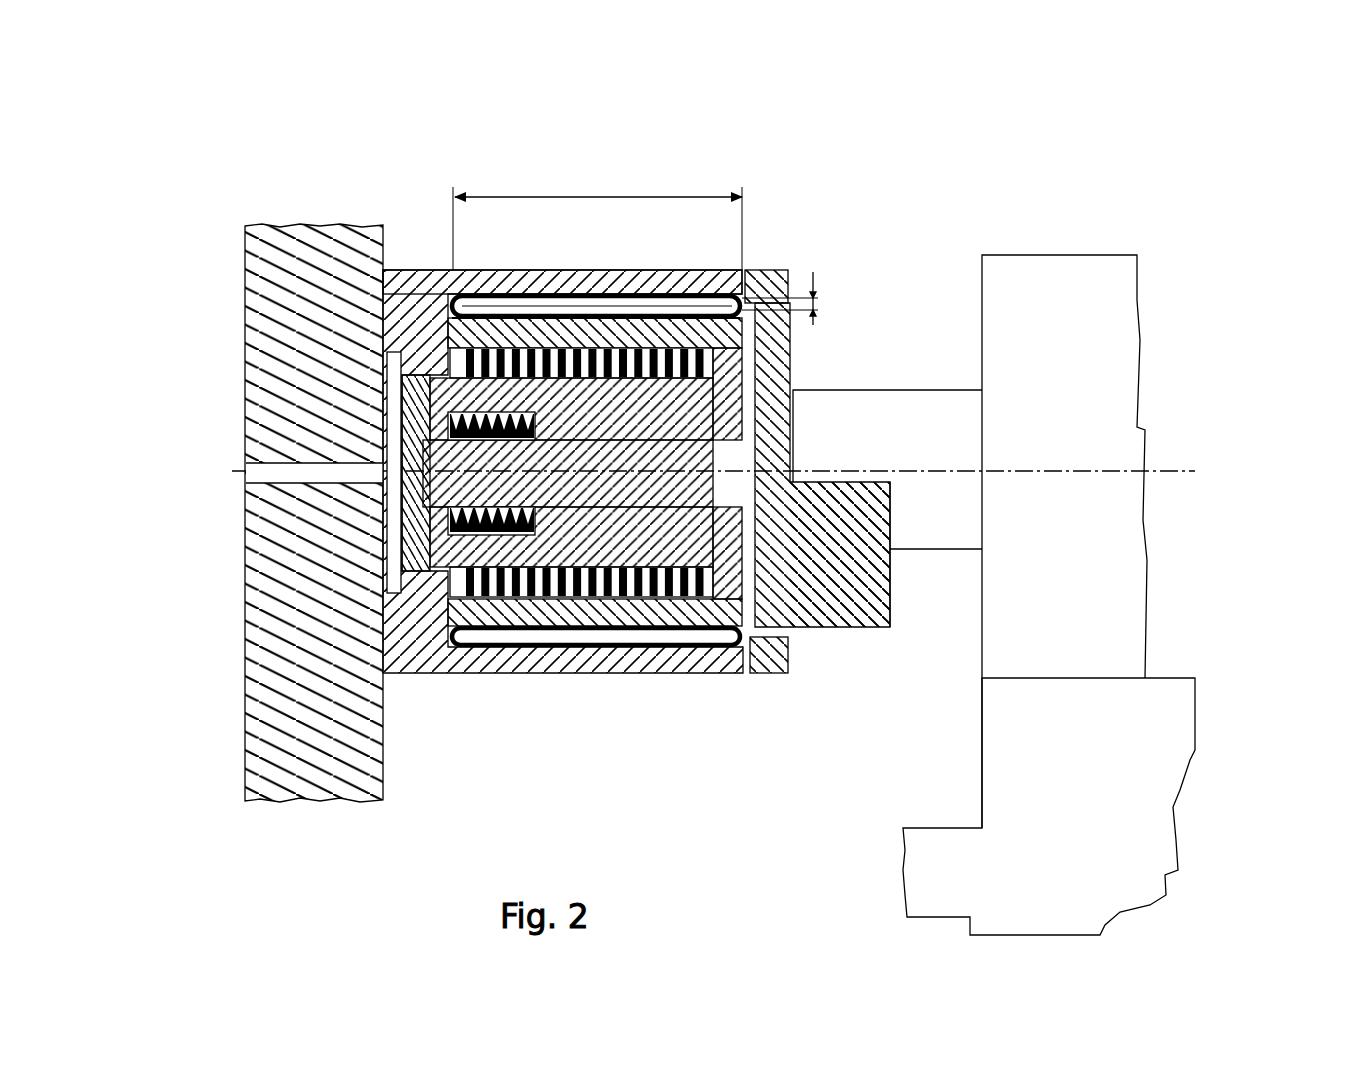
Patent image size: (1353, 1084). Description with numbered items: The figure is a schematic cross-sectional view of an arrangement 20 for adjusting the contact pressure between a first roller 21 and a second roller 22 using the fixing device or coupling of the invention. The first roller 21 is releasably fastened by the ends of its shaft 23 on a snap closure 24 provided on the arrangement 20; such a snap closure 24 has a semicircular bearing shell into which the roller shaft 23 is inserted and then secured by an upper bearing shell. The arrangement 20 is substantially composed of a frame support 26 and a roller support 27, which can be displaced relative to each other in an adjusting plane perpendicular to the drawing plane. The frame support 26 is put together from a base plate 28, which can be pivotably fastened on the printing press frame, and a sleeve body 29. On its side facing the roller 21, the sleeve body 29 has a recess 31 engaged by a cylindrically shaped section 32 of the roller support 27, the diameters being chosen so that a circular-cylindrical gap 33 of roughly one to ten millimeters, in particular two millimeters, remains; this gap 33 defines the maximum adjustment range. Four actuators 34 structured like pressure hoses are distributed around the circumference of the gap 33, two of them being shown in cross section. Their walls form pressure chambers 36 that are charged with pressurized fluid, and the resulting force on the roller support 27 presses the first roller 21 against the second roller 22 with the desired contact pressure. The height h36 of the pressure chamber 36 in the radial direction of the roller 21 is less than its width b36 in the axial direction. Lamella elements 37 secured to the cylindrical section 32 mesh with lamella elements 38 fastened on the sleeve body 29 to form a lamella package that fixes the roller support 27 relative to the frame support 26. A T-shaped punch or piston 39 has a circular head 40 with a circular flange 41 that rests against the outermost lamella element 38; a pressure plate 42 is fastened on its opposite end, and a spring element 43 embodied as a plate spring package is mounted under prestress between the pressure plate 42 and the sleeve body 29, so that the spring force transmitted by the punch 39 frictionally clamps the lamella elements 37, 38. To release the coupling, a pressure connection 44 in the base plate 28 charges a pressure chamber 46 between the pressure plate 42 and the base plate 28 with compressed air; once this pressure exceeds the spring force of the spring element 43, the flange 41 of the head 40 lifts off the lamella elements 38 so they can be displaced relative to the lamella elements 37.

The arrangement 20 is at (599, 458).
The first roller 21 is at (1115, 388).
The second roller 22 is at (1132, 757).
The shaft 23 is at (855, 418).
The snap closure 24 is at (840, 617).
The frame support 26 is at (405, 222).
The roller support 27 is at (787, 350).
The base plate 28 is at (308, 247).
The sleeve body 29 is at (525, 282).
The recess 31 is at (712, 302).
The cylindrically shaped section 32 is at (667, 312).
The gap 33 is at (595, 294).
The actuator 34 is at (752, 290).
The pressure chamber 36 is at (486, 296).
The lamella elements 37 is at (657, 598).
The lamella elements 38 is at (612, 585).
The punch or piston 39 is at (560, 487).
The head 40 is at (742, 598).
The flange 41 is at (718, 603).
The pressure plate 42 is at (452, 518).
The spring element 43 is at (455, 425).
The pressure connection 44 is at (262, 478).
The pressure chamber 46 is at (410, 568).
The width of the pressure chamber b36 is at (597, 217).
The height of the pressure chamber h36 is at (806, 296).